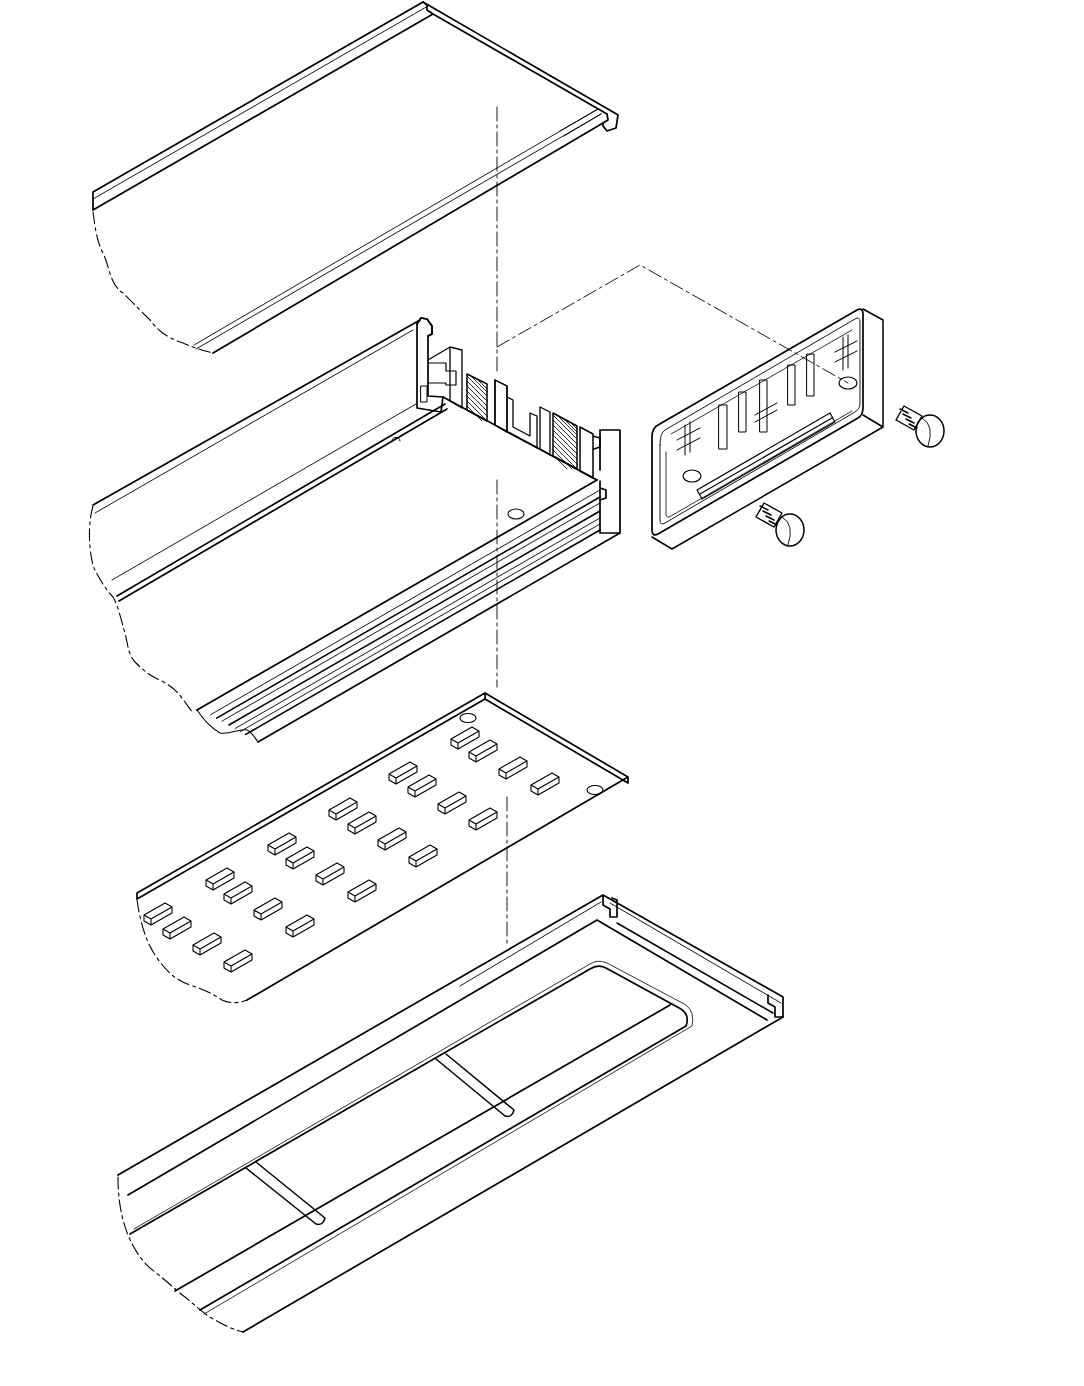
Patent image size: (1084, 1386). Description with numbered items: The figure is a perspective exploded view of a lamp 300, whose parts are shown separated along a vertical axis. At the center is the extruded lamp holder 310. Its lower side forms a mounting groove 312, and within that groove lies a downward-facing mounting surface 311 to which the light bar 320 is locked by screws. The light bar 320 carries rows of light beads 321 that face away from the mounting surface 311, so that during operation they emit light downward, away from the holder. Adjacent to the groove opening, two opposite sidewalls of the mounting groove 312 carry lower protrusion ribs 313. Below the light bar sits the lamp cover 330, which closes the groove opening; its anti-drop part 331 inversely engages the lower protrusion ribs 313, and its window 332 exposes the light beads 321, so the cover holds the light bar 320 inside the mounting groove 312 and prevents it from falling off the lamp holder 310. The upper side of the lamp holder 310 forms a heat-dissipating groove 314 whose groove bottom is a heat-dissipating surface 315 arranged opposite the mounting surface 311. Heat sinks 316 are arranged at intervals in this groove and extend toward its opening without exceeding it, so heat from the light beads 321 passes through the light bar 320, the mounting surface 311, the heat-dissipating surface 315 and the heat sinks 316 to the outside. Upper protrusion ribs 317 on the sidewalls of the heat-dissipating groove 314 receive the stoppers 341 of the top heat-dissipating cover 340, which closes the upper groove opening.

The lamp 300 is at (680, 192).
The lamp holder 310 is at (203, 740).
The mounting surface 311 is at (195, 677).
The mounting groove 312 is at (328, 595).
The lower protrusion ribs 313 is at (520, 553).
The heat-dissipating groove 314 is at (473, 372).
The heat-dissipating surface 315 is at (517, 338).
The heat sinks 316 is at (508, 380).
The upper protrusion ribs 317 is at (430, 333).
The light bar 320 is at (345, 930).
The light beads 321 is at (172, 930).
The lamp cover 330 is at (667, 1077).
The anti-drop part 331 is at (556, 920).
The window 332 is at (590, 1068).
The top heat-dissipating cover 340 is at (558, 97).
The stoppers 341 is at (597, 125).